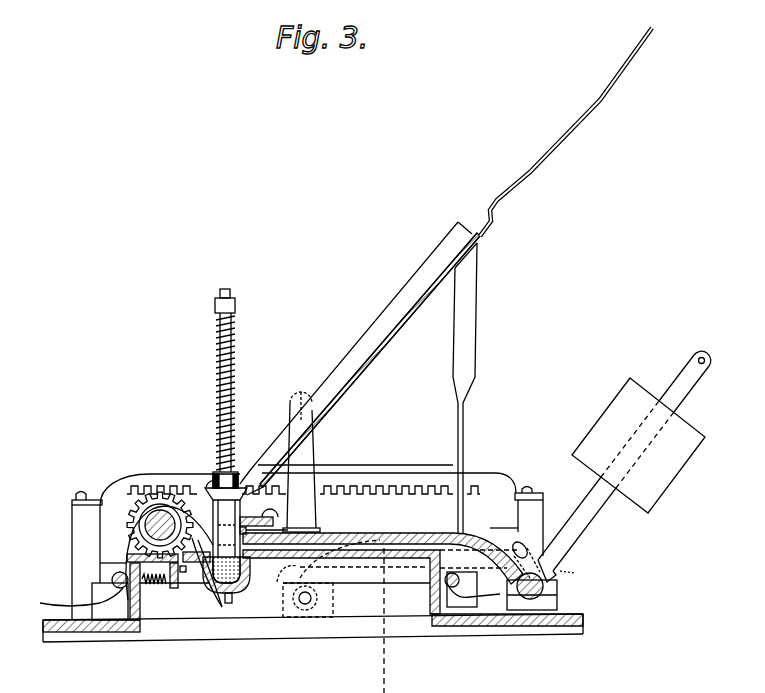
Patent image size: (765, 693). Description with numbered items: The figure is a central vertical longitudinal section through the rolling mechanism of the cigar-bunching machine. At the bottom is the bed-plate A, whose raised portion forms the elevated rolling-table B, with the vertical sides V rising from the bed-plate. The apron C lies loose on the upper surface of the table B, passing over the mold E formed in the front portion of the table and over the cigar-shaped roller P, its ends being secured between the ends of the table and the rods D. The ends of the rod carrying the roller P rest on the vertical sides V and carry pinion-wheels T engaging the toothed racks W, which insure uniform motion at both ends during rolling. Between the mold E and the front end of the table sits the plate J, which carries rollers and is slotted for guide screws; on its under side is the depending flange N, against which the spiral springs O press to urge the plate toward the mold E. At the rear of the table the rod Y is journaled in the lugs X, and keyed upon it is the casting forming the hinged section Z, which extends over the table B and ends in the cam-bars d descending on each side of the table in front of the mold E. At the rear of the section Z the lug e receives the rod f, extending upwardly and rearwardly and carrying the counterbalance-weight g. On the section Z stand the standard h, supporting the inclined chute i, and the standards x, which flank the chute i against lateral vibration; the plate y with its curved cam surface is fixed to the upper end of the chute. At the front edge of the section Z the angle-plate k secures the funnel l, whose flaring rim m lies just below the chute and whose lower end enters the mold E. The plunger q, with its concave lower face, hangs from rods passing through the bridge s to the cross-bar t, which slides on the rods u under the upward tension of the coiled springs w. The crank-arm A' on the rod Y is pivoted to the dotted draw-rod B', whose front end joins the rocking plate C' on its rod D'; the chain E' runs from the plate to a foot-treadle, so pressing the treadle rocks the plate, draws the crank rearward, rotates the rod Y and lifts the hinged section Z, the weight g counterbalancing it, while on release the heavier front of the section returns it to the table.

The bed-plate A is at (313, 638).
The rolling-table B is at (341, 582).
The apron C is at (270, 594).
The rods D is at (284, 596).
The mold E is at (231, 580).
The plate J is at (40, 557).
The depending flange N is at (155, 591).
The spiral springs O is at (175, 586).
The roller P is at (145, 527).
The pinion-wheels T is at (141, 503).
The vertical sides V is at (300, 546).
The toothed racks W is at (170, 474).
The lugs X is at (569, 600).
The rod Y is at (532, 603).
The hinged section Z is at (466, 540).
The cam c is at (169, 553).
The cam-bars d is at (207, 577).
The lug e is at (571, 574).
The rod f is at (475, 466).
The counterbalance-weight g is at (638, 445).
The standard h is at (470, 388).
The inclined chute i is at (360, 358).
The angle-plate k is at (259, 513).
The funnel l is at (226, 528).
The outwardly-flaring rim m is at (226, 495).
The plunger q is at (206, 482).
The bridge s is at (222, 473).
The cross-bar t is at (215, 308).
The rods u is at (219, 348).
The coiled springs w is at (236, 374).
The standards x is at (301, 467).
The plate y is at (566, 132).
The arch z is at (297, 415).
The crank-arm A' is at (524, 541).
The draw-rod B' is at (424, 559).
The rocking plate C' is at (287, 574).
The rod D' is at (308, 600).
The chain E' is at (391, 620).